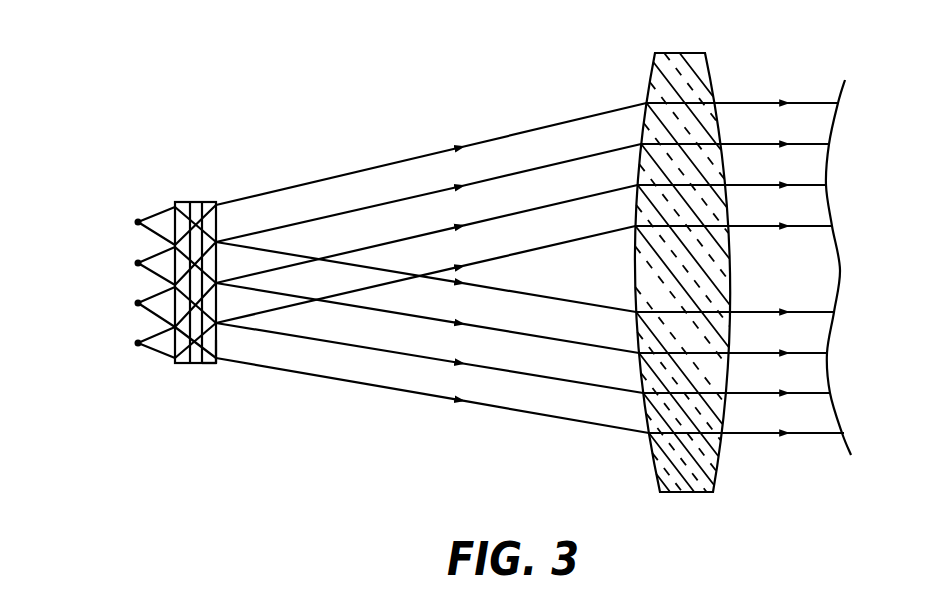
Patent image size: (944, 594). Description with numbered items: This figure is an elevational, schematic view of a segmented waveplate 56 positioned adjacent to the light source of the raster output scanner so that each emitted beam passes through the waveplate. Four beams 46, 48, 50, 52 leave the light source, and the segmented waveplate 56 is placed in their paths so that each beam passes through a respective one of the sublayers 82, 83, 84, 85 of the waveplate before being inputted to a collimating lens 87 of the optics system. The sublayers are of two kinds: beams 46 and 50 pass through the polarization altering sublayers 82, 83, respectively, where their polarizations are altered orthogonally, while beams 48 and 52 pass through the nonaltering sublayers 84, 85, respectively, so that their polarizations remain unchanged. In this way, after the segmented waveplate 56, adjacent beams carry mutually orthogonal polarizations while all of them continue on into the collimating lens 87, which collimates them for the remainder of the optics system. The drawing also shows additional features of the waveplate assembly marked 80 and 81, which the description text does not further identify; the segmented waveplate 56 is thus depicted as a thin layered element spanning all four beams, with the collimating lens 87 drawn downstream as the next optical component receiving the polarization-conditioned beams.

The beam 46 is at (128, 218).
The beam 48 is at (128, 261).
The beam 50 is at (98, 320).
The beam 52 is at (128, 349).
The segmented waveplate 56 is at (200, 190).
The lens array element 80 is at (184, 202).
The lens array element 81 is at (175, 322).
The polarization altering sublayer 82 is at (175, 245).
The polarization altering sublayer 83 is at (217, 362).
The nonaltering sublayer 84 is at (186, 363).
The nonaltering sublayer 85 is at (207, 363).
The collimating lens 87 is at (680, 53).